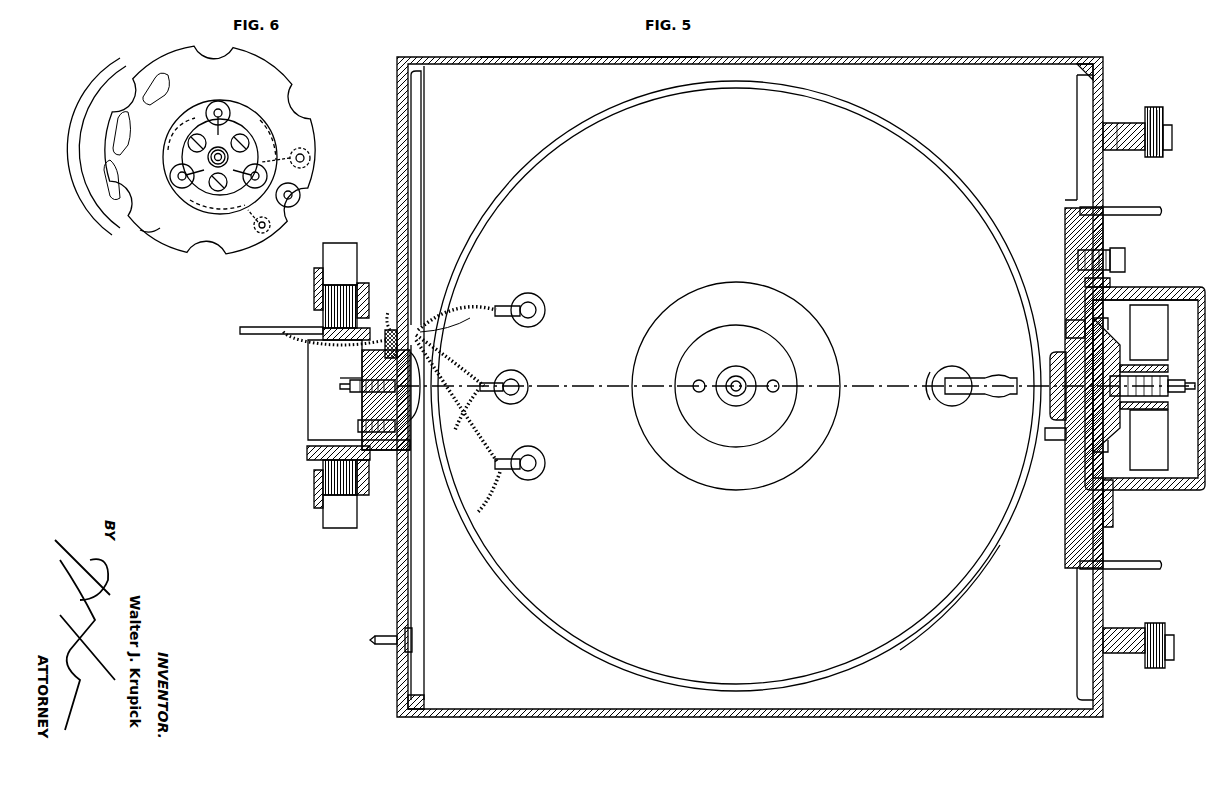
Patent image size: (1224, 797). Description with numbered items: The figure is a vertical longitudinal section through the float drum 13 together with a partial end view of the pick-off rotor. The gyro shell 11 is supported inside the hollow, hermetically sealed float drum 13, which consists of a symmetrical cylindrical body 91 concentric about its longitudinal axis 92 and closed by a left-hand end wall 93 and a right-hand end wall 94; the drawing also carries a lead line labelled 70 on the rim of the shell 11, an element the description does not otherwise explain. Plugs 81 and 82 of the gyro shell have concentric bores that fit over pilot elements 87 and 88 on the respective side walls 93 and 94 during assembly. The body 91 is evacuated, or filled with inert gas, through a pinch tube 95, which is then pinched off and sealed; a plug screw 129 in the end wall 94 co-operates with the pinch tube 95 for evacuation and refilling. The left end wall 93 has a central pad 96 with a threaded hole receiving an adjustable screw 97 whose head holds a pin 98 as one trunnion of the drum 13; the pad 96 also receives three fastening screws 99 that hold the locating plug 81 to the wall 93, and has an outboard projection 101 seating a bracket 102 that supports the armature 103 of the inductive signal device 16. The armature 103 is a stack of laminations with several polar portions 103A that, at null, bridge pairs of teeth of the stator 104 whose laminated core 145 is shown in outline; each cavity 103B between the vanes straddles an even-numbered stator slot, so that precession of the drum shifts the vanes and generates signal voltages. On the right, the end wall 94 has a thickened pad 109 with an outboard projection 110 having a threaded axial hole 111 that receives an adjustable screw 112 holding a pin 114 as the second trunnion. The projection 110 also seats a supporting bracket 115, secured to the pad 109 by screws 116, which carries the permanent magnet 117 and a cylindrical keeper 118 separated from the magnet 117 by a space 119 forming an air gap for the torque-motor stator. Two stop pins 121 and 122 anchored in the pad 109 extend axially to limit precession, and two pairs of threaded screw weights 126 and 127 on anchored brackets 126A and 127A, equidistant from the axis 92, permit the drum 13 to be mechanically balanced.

In FIG. 5, the float drum 13 is at (896, 49).
In FIG. 5, the cylindrical body 91 is at (549, 65).
In FIG. 5, the left-hand drum end wall 93 is at (413, 104).
In FIG. 5, the right-hand drum end wall 94 is at (1080, 85).
In FIG. 5, the gyro shell 11 is at (881, 114).
In FIG. 5, the disk rim 70 is at (1006, 545).
In FIG. 5, the longitudinal axis 92 is at (570, 388).
In FIG. 5, the locating plug 81 is at (438, 315).
In FIG. 5, the pilot element 87 is at (430, 470).
In FIG. 5, the electromagnetic inductive signal device 16 is at (301, 417).
In FIG. 6, the electromagnetic inductive signal device 16 is at (318, 128).
In FIG. 5, the polar portions 103A is at (340, 243).
In FIG. 6, the polar portions 103A is at (158, 232).
In FIG. 5, the armature 103 is at (335, 300).
In FIG. 6, the armature 103 is at (250, 232).
In FIG. 5, the bracket 102 is at (308, 460).
In FIG. 6, the bracket 102 is at (170, 150).
In FIG. 5, the fastening screws 99 is at (388, 320).
In FIG. 5, the pin 98 is at (340, 391).
In FIG. 5, the adjustable screw 97 is at (356, 400).
In FIG. 5, the outboard projection 101 is at (340, 378).
In FIG. 5, the central pad 96 is at (395, 466).
In FIG. 5, the pinch tube 95 is at (386, 633).
In FIG. 5, the pad 109 is at (1066, 512).
In FIG. 5, the pilot element 88 is at (1052, 360).
In FIG. 5, the plug screw 129 is at (1068, 318).
In FIG. 5, the plug 82 is at (1052, 442).
In FIG. 5, the cylindrical keeper 118 is at (1200, 280).
In FIG. 5, the space 119 is at (1166, 288).
In FIG. 5, the supporting bracket 115 is at (1112, 280).
In FIG. 5, the permanent magnet 117 is at (1160, 327).
In FIG. 5, the outboard projection 110 is at (1108, 440).
In FIG. 5, the threaded axial hole 111 is at (1110, 405).
In FIG. 5, the adjustable screw 112 is at (1166, 382).
In FIG. 5, the pin 114 is at (1185, 394).
In FIG. 5, the screws 116 is at (1120, 253).
In FIG. 5, the stop pin 121 is at (1126, 210).
In FIG. 5, the stop pin 122 is at (1133, 565).
In FIG. 5, the anchored bracket 126A is at (1120, 123).
In FIG. 5, the anchored bracket 127A is at (1137, 122).
In FIG. 5, the threaded screw weights 126 is at (1163, 112).
In FIG. 5, the threaded screw weights 127 is at (1177, 365).
In FIG. 6, the stator 104 is at (139, 57).
In FIG. 6, the stator laminations 145 is at (112, 96).
In FIG. 6, the cavity 103B is at (210, 240).